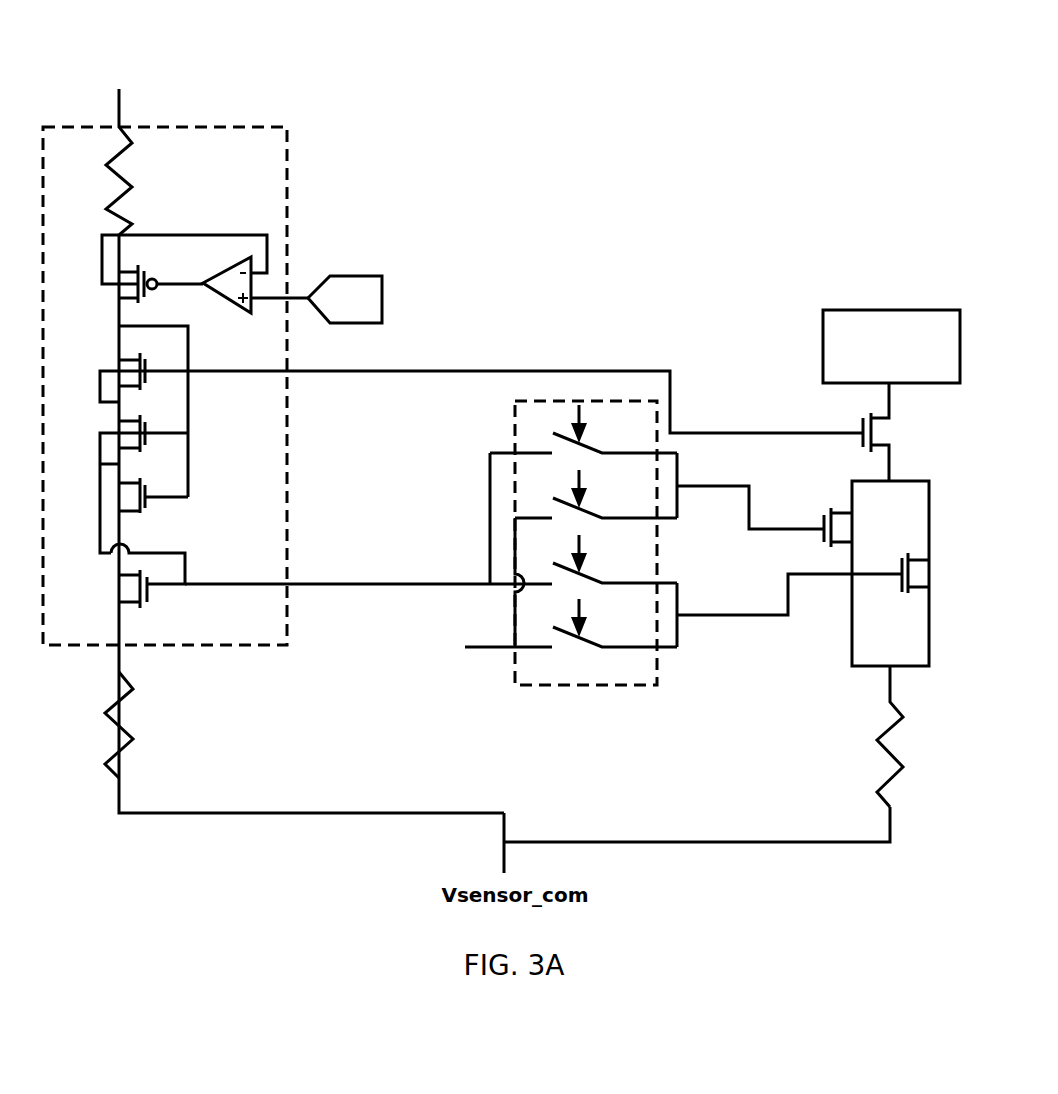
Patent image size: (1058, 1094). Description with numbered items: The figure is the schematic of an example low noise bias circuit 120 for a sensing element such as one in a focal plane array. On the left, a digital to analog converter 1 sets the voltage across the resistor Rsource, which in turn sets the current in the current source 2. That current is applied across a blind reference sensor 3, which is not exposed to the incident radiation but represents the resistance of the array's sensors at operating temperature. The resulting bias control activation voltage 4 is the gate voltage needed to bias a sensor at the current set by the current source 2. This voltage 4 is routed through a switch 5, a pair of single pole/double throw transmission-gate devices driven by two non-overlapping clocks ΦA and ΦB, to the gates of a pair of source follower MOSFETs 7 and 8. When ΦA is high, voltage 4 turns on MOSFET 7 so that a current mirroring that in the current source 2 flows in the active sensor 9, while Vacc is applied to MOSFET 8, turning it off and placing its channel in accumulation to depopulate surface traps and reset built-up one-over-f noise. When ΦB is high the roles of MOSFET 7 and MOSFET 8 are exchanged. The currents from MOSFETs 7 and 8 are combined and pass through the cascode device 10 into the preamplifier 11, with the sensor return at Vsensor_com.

The digital to analog converter 1 is at (345, 284).
The current source 2 is at (123, 480).
The reference sensor 3 is at (186, 730).
The bias control activation voltage 4 is at (368, 570).
The switch 5 is at (657, 543).
The MOSFET 7 is at (821, 534).
The MOSFET 8 is at (908, 586).
The active sensor 9 is at (845, 736).
The cascode device 10 is at (898, 432).
The preamplifier 11 is at (891, 346).
The bias circuit 120 is at (284, 411).